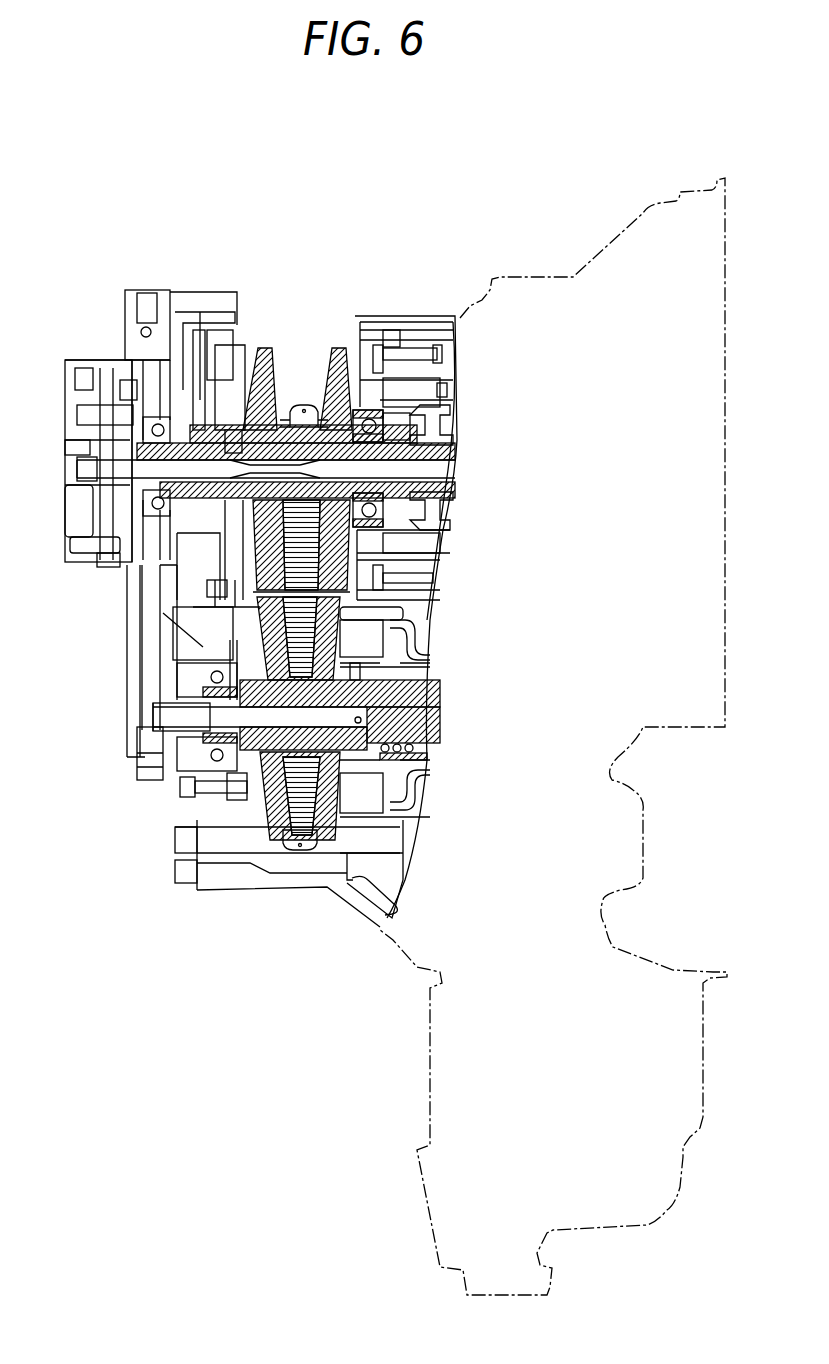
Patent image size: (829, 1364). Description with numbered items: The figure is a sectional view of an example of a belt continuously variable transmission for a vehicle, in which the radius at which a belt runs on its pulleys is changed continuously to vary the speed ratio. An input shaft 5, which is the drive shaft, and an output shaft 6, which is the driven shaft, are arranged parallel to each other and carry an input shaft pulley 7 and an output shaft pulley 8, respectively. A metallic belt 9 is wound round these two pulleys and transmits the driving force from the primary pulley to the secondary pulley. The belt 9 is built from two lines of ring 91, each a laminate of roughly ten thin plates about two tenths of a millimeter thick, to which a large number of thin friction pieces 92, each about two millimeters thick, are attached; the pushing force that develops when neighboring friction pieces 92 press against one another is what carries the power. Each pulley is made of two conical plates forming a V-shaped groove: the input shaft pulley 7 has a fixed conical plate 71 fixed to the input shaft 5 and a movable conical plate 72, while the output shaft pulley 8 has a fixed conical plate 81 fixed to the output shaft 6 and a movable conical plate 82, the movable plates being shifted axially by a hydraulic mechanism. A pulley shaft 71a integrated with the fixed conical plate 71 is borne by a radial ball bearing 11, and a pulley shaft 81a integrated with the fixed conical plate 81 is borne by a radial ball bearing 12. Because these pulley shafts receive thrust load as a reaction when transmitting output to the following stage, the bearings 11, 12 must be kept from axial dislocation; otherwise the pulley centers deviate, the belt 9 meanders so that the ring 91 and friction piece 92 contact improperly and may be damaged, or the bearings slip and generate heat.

The input shaft 5 is at (443, 469).
The output shaft 6 is at (233, 719).
The input shaft pulley 7 is at (303, 294).
The fixed conical plate 71 is at (355, 316).
The movable conical plate 72 is at (264, 316).
The pulley shaft 71a is at (440, 430).
The output shaft pulley 8 is at (340, 748).
The fixed conical plate 81 is at (273, 853).
The movable conical plate 82 is at (327, 853).
The pulley shaft 81a is at (228, 782).
The metallic belt 9 is at (308, 326).
The ring 91 is at (355, 272).
The friction piece 92 is at (307, 318).
The radial ball bearing 11 is at (372, 395).
The radial ball bearing 12 is at (195, 660).